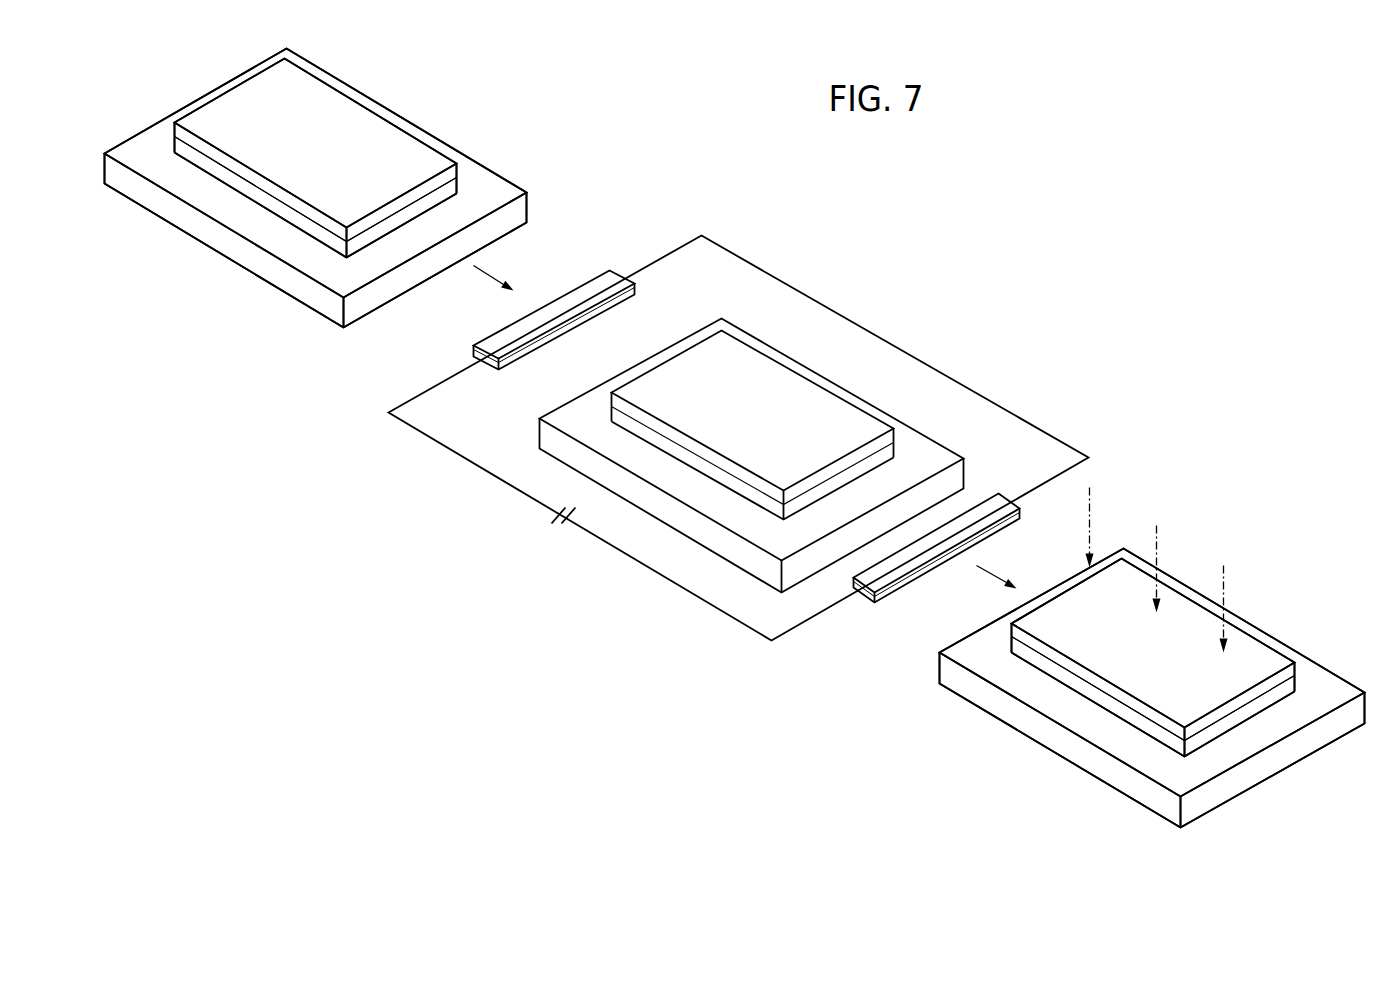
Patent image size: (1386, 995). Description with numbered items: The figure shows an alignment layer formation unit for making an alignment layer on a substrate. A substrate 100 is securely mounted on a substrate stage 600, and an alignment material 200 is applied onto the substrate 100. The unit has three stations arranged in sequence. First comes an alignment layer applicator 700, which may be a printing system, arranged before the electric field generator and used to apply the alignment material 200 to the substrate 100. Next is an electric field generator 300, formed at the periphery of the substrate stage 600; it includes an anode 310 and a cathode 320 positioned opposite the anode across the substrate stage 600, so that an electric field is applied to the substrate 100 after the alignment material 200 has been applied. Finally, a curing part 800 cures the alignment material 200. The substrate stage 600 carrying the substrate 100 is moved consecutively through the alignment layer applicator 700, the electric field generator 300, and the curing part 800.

The substrate 100 is at (263, 198).
The alignment material 200 is at (238, 170).
The electric field generator 300 is at (548, 556).
The anode 310 is at (599, 285).
The cathode 320 is at (989, 508).
The substrate stage 600 is at (492, 181).
The alignment layer applicator 700 is at (262, 335).
The curing part 800 is at (1050, 787).